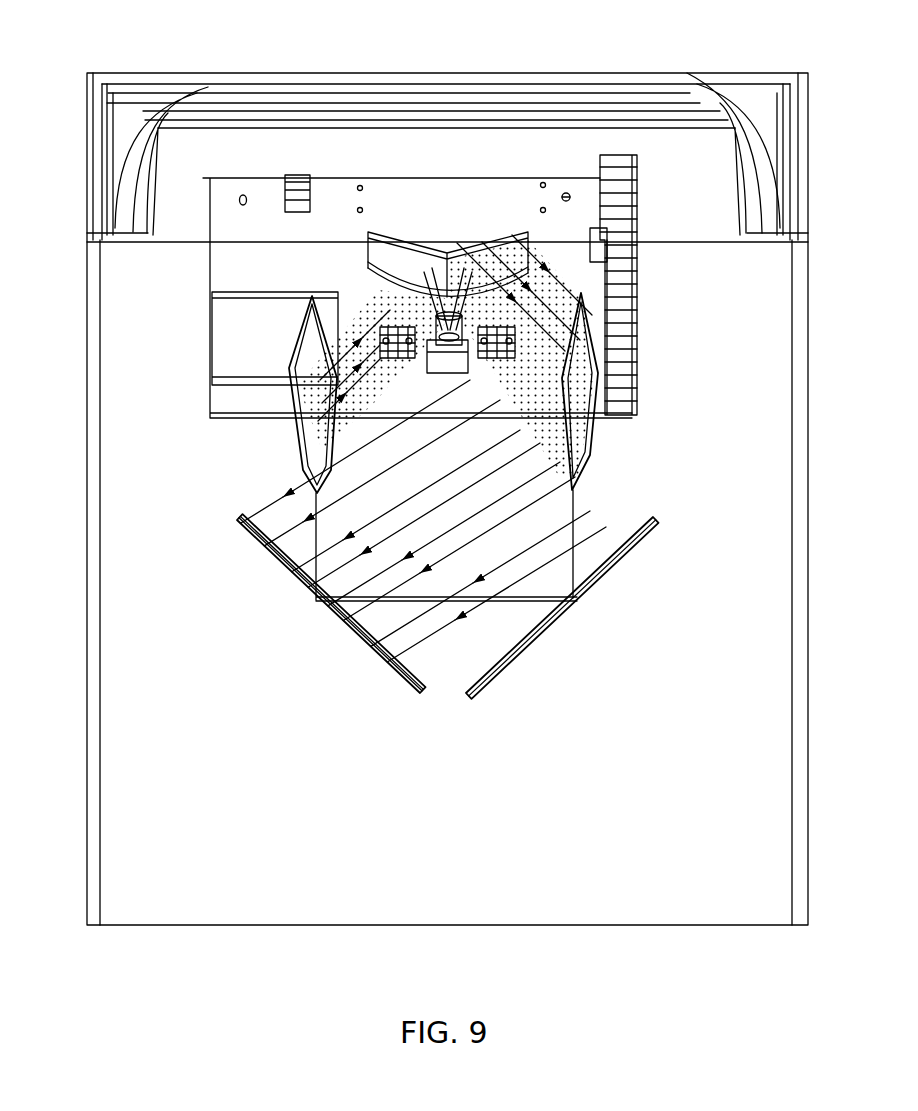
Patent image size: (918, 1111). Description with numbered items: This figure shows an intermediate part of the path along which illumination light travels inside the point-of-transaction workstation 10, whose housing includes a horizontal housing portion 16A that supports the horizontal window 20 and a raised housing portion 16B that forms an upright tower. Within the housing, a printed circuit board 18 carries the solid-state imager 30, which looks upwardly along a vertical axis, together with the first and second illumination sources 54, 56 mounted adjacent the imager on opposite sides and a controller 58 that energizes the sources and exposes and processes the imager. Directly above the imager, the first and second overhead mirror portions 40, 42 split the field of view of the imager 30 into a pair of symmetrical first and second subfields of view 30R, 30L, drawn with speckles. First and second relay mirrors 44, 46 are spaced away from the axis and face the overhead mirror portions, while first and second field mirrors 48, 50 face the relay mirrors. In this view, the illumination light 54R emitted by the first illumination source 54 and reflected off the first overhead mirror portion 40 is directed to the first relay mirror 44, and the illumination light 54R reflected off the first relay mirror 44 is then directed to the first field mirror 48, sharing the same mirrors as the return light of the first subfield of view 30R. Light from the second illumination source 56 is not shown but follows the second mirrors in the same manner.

The point-of-transaction workstation 10 is at (100, 53).
The horizontal housing portion 16A is at (122, 662).
The raised housing portion 16B is at (95, 173).
The printed circuit board 18 is at (218, 405).
The horizontal window 20 is at (575, 542).
The solid-state imager 30 is at (442, 380).
The second subfield of view 30L is at (428, 268).
The first subfield of view 30R is at (470, 270).
The first overhead mirror portion 40 is at (527, 231).
The second overhead mirror portion 42 is at (393, 250).
The first relay mirror 44 is at (587, 473).
The second relay mirror 46 is at (300, 440).
The first field mirror 48 is at (348, 640).
The second field mirror 50 is at (512, 660).
The first illumination source 54 is at (485, 360).
The illumination light 54R is at (567, 303).
The second illumination source 56 is at (373, 332).
The controller 58 is at (210, 361).